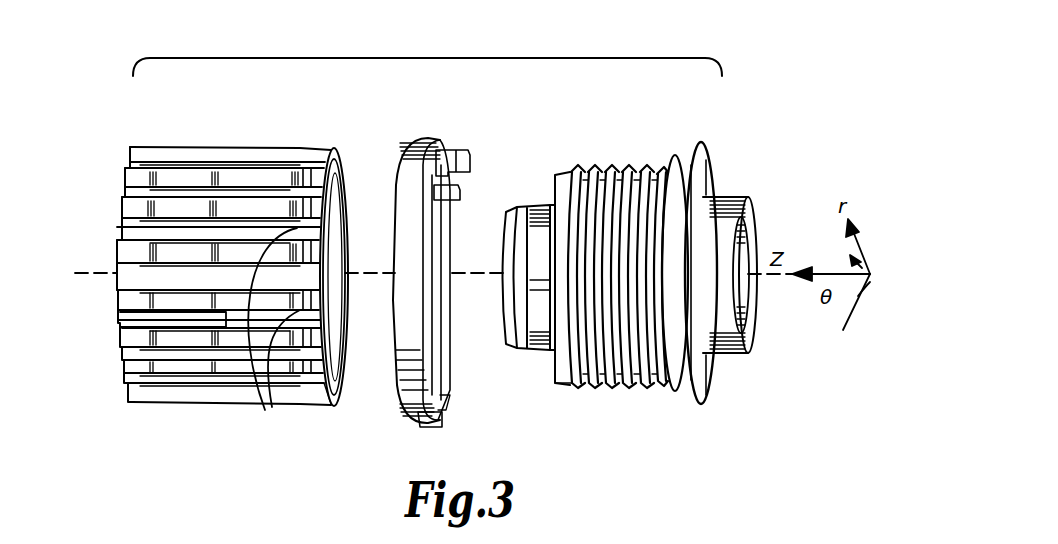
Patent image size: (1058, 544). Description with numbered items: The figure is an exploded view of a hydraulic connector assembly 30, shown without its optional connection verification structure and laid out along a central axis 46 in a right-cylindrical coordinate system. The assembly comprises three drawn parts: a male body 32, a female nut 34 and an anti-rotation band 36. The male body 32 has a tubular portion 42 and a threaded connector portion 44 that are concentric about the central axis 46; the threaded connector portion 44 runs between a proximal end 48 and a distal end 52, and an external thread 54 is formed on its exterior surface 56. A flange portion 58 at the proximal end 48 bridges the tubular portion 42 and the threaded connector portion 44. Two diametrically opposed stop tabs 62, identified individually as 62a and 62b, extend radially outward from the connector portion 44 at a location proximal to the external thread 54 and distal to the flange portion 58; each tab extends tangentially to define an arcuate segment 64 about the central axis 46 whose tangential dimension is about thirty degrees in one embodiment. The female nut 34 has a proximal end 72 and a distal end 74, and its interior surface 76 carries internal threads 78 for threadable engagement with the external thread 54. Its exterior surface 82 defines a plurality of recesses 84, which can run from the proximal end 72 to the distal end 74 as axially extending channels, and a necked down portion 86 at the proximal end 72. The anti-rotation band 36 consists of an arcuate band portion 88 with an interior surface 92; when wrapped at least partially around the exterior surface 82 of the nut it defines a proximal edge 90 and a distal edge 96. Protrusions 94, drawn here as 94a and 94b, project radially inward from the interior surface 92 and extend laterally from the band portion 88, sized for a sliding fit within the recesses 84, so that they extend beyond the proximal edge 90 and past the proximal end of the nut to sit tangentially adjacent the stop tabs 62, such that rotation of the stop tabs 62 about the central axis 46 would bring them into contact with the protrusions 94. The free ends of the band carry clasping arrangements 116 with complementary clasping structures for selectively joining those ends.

The hydraulic connector assembly 30 is at (412, 57).
The male body 32 is at (650, 275).
The female nut 34 is at (231, 270).
The anti-rotation band 36 is at (475, 274).
The tubular portion 42 is at (518, 342).
The threaded connector portion 44 is at (615, 164).
The central axis 46 is at (93, 270).
The proximal end 48 is at (700, 400).
The distal end 52 is at (566, 376).
The external thread 54 is at (580, 392).
The exterior surface 56 is at (560, 182).
The flange portion 58 is at (720, 372).
The stop tab 62 is at (720, 283).
The first flange 62a is at (673, 160).
The second flange 62b is at (684, 405).
The arcuate segment 64 is at (702, 163).
The proximal end 72 is at (342, 392).
The distal end 74 is at (120, 345).
The interior surface 76 is at (338, 222).
The internal threads 78 is at (328, 280).
The exterior surface 82 is at (207, 146).
The recesses 84 is at (224, 309).
The necked down portion 86 is at (348, 150).
The band portion 88 is at (398, 370).
The proximal edge 90 is at (455, 378).
The interior surface 92 is at (432, 320).
The protrusion 94 is at (516, 155).
The first tab 94a is at (458, 150).
The second tab 94b is at (462, 188).
The distal edge 96 is at (408, 228).
The clasping arrangements 116 is at (447, 425).